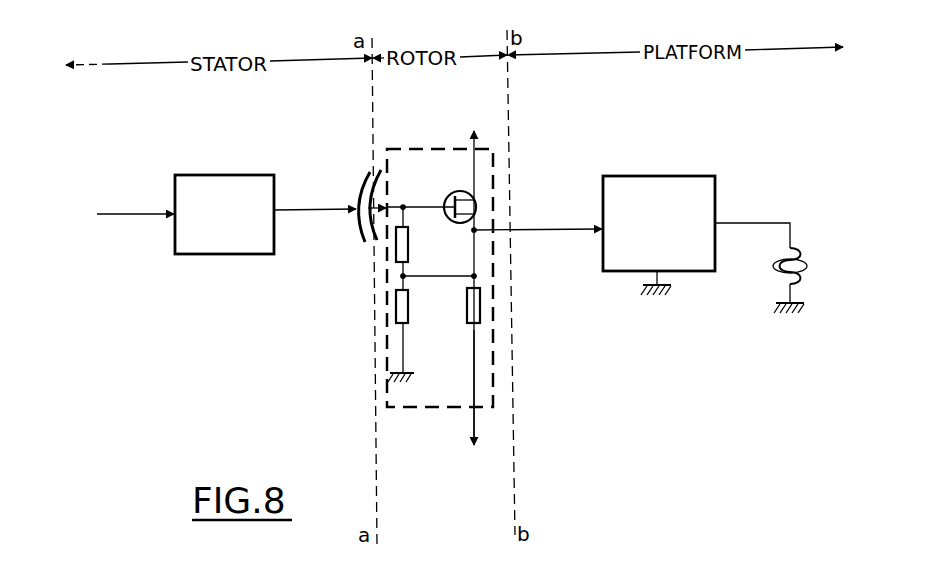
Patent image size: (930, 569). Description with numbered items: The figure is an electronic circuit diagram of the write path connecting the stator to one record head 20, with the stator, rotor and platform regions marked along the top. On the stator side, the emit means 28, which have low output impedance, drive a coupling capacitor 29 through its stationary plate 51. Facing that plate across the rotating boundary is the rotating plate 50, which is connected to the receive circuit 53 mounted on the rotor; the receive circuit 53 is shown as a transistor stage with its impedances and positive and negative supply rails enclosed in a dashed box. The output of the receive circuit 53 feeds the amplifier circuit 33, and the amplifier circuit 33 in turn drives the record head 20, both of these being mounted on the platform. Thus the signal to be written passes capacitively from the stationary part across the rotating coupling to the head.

The emit means 28 is at (229, 175).
The rotary capacitive coupling 29 is at (354, 215).
The stationary plate 51 is at (361, 229).
The rotating plate 50 is at (376, 246).
The receive circuit 53 is at (450, 411).
The amplifier circuit 33 is at (650, 176).
The record head 20 is at (801, 238).